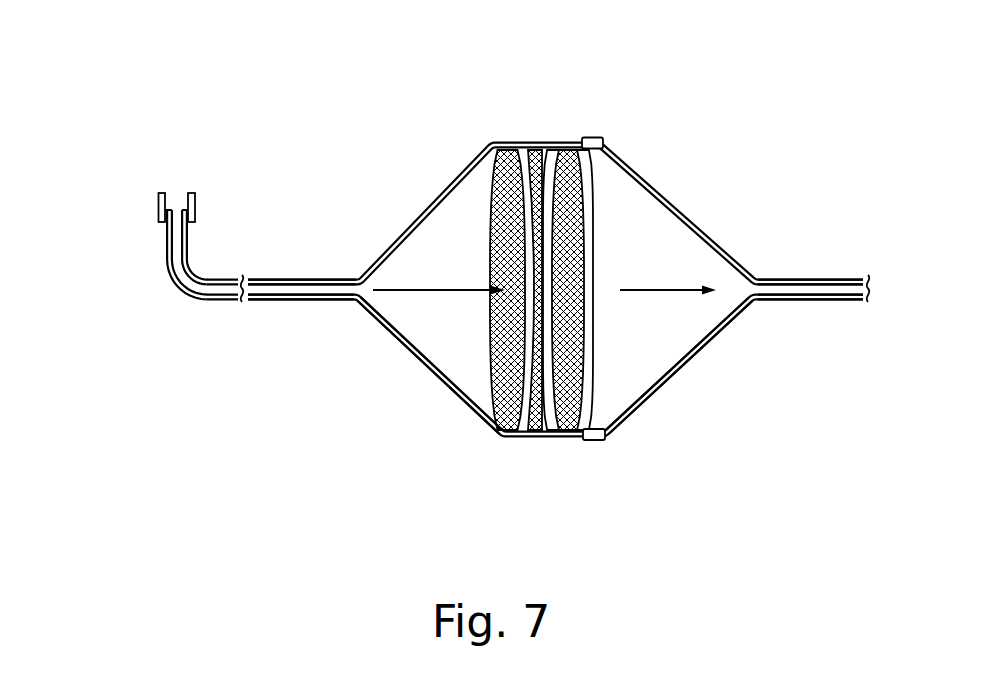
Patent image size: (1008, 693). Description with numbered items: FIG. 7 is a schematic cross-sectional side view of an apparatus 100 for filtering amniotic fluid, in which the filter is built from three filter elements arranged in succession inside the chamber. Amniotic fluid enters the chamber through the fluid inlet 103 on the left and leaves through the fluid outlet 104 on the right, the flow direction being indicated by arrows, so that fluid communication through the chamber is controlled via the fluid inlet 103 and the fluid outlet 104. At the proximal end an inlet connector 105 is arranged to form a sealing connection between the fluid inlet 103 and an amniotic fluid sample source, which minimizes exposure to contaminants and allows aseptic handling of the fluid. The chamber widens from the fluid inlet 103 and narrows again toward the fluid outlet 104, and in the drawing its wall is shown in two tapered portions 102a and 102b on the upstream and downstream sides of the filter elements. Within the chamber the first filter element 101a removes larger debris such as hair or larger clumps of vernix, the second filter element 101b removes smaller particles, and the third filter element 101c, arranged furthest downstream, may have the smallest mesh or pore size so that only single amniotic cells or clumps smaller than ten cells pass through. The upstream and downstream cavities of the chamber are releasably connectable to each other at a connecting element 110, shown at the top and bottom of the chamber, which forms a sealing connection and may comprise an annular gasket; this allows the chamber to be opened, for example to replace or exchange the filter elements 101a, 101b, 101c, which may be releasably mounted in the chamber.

The apparatus for filtering amniotic fluid 100 is at (150, 86).
The first filter element 101a is at (512, 143).
The second filter element 101b is at (530, 143).
The third filter element 101c is at (575, 143).
The proximal tapered sheath section 102a is at (445, 380).
The distal tapered sheath section 102b is at (670, 382).
The fluid inlet 103 is at (348, 290).
The fluid outlet 104 is at (767, 292).
The inlet connector 105 is at (180, 322).
The connecting element 110 is at (593, 138).